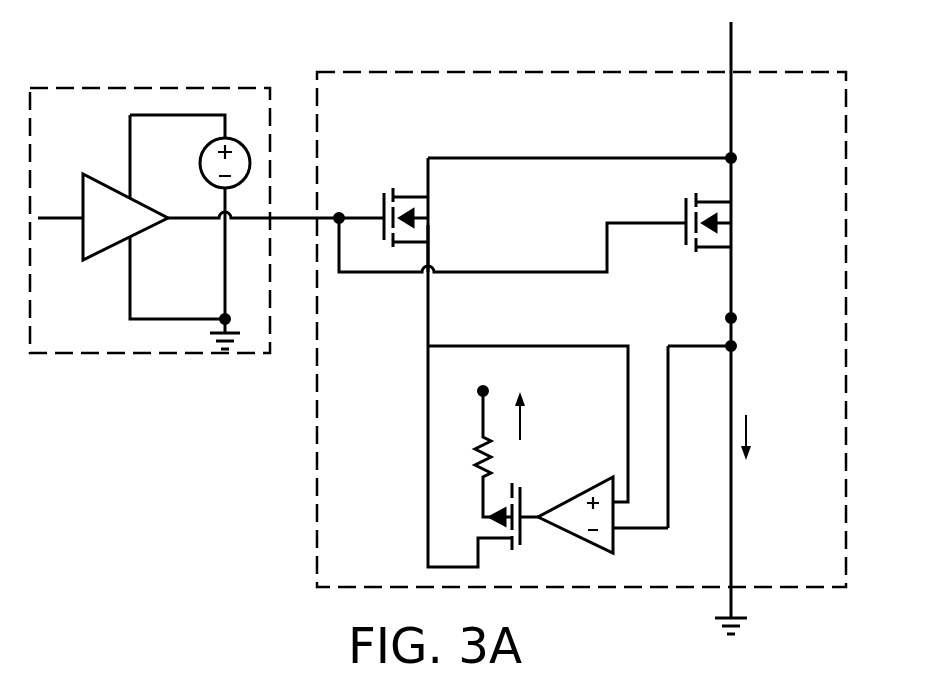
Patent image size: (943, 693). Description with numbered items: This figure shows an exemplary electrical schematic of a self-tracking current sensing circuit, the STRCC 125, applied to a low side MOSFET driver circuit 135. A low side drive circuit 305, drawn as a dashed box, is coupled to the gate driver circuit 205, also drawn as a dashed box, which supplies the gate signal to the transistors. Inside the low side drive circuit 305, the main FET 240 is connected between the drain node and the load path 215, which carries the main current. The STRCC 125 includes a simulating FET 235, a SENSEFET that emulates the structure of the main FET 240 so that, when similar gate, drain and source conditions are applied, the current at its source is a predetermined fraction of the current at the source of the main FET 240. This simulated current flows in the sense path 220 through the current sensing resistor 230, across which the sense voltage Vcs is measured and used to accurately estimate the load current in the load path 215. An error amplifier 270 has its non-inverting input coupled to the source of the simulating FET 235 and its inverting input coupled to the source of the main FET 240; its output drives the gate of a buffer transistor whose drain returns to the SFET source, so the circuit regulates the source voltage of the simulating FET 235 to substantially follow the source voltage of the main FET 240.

The gate driver circuit 205 is at (173, 88).
The low side drive circuit 305 is at (560, 72).
The STRCC 125 is at (444, 126).
The low side MOSFET driver circuit 135 is at (646, 126).
The simulating FET 235 is at (432, 224).
The main FET 240 is at (734, 238).
The load path 215 is at (748, 432).
The sense path 220 is at (525, 420).
The current sensing resistor 230 is at (492, 462).
The error amplifier 270 is at (593, 487).